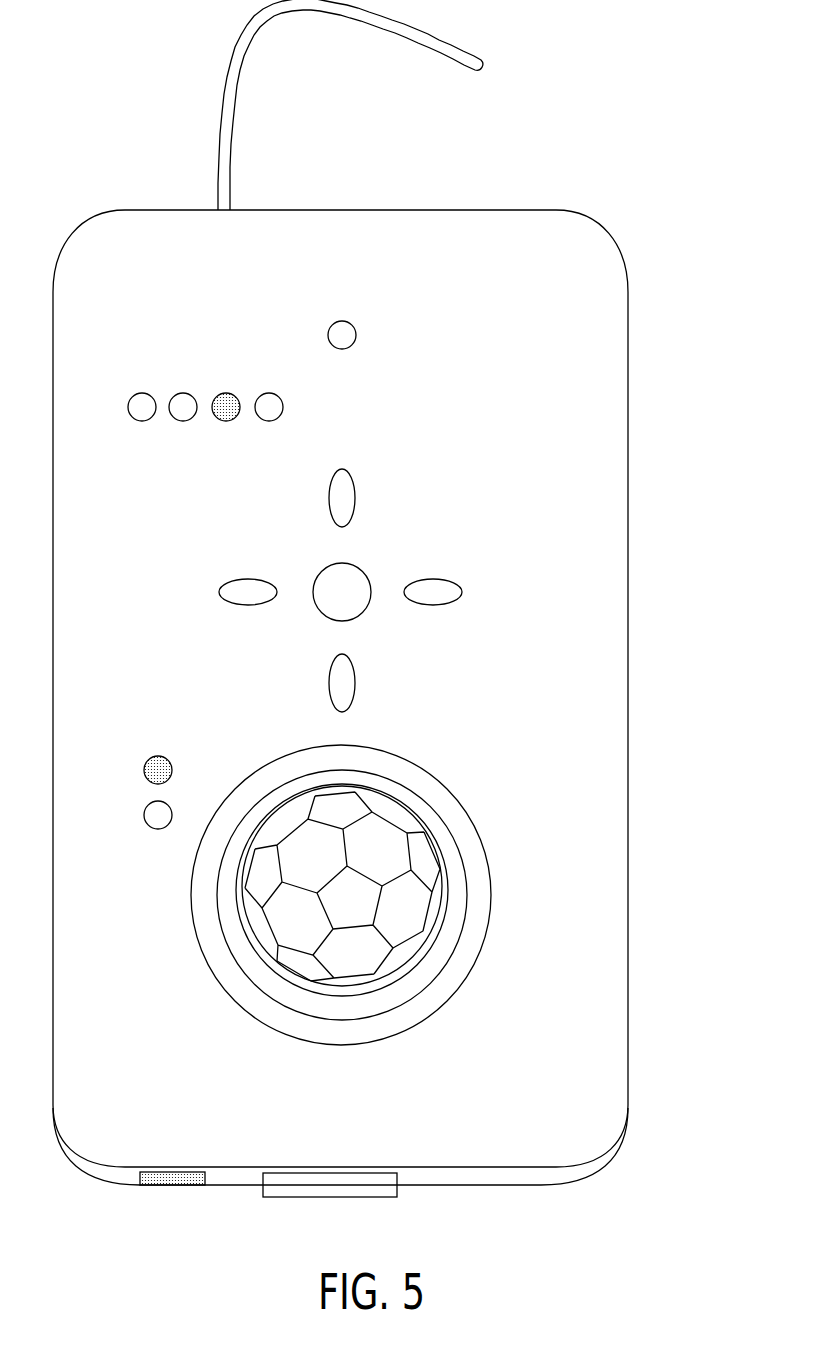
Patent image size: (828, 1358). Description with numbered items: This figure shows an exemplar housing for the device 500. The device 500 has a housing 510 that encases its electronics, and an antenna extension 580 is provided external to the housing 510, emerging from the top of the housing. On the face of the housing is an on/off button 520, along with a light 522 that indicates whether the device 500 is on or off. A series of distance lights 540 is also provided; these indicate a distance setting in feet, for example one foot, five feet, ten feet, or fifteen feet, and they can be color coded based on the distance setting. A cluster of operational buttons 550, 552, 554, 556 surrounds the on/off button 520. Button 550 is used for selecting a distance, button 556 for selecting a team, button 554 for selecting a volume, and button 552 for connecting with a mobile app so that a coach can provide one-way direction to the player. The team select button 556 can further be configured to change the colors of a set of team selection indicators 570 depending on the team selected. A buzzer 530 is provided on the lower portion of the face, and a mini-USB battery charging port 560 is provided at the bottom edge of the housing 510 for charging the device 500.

The device 500 is at (624, 103).
The housing 510 is at (585, 228).
The on/off button 520 is at (362, 610).
The light 522 is at (344, 321).
The buzzer 530 is at (421, 905).
The distance lights 540 is at (283, 384).
The operational button 550 is at (354, 500).
The operational button 552 is at (435, 578).
The operational button 554 is at (354, 683).
The operational button 556 is at (247, 578).
The mini-USB battery charging port 560 is at (161, 1190).
The team selection indicators 570 is at (138, 758).
The antenna extension 580 is at (454, 38).